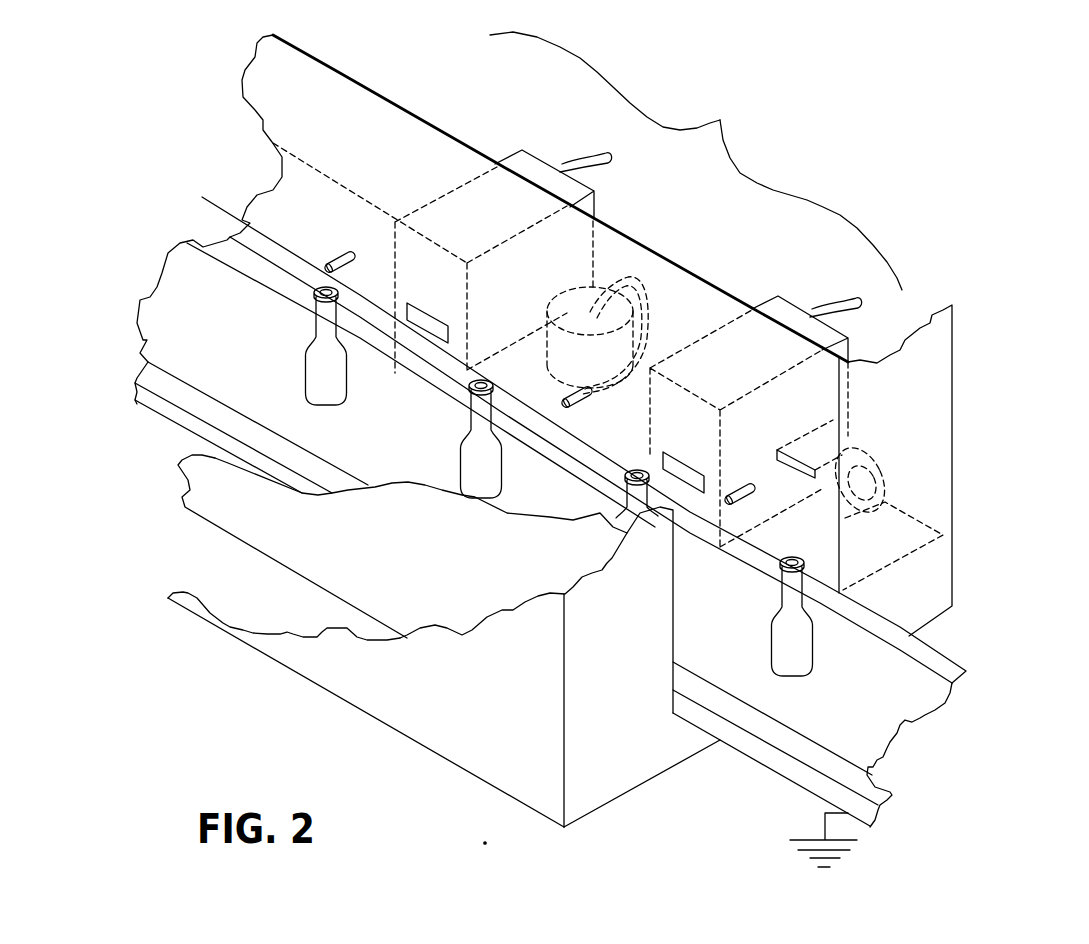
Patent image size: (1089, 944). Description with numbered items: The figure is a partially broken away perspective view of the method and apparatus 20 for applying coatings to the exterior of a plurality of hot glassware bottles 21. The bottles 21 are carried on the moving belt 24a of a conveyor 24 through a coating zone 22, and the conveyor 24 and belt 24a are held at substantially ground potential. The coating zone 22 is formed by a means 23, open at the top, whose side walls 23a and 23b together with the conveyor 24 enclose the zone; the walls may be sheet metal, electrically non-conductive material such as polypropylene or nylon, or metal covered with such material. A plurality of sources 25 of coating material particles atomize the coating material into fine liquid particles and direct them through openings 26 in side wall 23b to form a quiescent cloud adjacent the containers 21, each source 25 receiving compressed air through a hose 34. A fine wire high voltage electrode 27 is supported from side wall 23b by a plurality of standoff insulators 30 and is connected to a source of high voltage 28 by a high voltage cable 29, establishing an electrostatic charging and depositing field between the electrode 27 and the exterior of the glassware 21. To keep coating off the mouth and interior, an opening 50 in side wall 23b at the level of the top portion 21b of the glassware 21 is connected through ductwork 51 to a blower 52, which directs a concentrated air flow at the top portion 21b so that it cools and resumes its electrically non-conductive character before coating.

The method and apparatus 20 is at (155, 120).
The bottles 21 is at (305, 362).
The top portion 21b is at (852, 552).
The coating zone 22 is at (696, 161).
The means for forming the coating zone 23 is at (951, 305).
The side wall 23a is at (180, 478).
The side wall 23b is at (240, 80).
The conveyor 24 is at (945, 770).
The moving belt 24a is at (922, 718).
The sources of coating material particles 25 is at (508, 150).
The openings 26 is at (440, 312).
The high voltage electrode 27 is at (236, 218).
The source of high voltage 28 is at (649, 315).
The high voltage cable 29 is at (627, 280).
The standoff insulators 30 is at (340, 258).
The hose 34 is at (603, 160).
The opening 50 is at (792, 467).
The ductwork 51 is at (807, 435).
The blower 52 is at (884, 451).